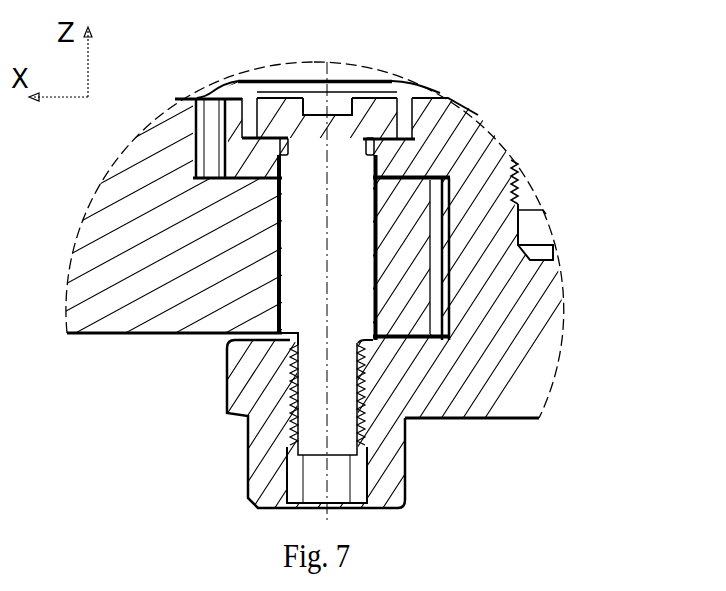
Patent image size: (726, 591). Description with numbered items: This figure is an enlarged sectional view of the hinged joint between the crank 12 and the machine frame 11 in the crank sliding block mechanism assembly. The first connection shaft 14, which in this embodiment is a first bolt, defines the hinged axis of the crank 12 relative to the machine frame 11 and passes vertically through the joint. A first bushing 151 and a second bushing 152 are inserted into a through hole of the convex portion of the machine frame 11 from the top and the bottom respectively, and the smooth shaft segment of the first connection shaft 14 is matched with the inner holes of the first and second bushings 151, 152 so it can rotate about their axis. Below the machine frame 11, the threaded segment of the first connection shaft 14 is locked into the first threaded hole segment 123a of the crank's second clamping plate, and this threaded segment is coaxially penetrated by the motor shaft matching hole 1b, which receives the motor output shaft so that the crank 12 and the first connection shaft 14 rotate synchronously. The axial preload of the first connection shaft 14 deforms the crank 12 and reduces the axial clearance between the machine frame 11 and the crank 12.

The first connection shaft 14 is at (380, 110).
The first bushing 151 is at (462, 153).
The second bushing 152 is at (388, 321).
The crank 12 is at (542, 291).
The machine frame 11 is at (133, 317).
The first threaded hole segment 123a is at (368, 406).
The motor shaft matching hole 1b is at (370, 490).